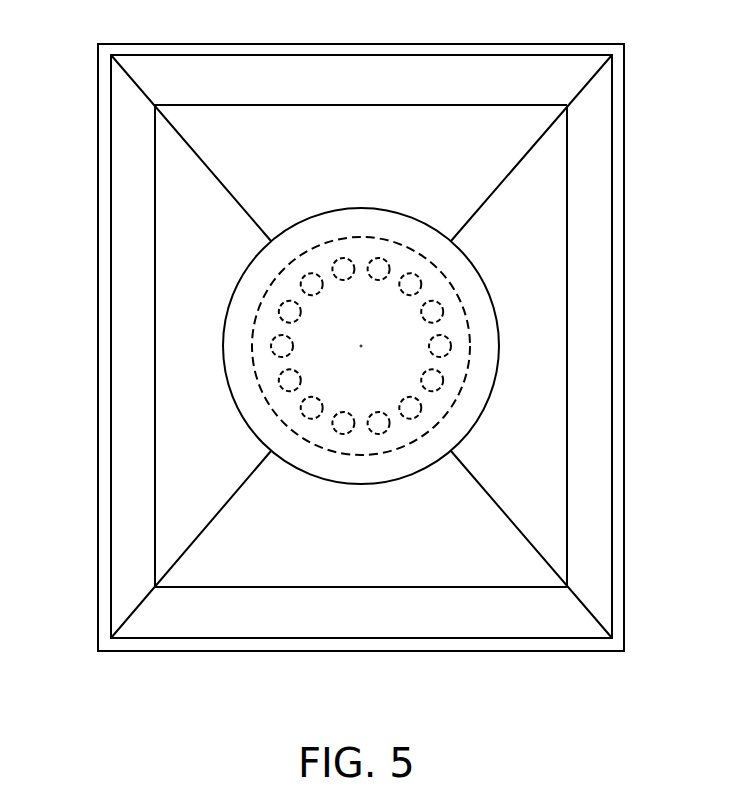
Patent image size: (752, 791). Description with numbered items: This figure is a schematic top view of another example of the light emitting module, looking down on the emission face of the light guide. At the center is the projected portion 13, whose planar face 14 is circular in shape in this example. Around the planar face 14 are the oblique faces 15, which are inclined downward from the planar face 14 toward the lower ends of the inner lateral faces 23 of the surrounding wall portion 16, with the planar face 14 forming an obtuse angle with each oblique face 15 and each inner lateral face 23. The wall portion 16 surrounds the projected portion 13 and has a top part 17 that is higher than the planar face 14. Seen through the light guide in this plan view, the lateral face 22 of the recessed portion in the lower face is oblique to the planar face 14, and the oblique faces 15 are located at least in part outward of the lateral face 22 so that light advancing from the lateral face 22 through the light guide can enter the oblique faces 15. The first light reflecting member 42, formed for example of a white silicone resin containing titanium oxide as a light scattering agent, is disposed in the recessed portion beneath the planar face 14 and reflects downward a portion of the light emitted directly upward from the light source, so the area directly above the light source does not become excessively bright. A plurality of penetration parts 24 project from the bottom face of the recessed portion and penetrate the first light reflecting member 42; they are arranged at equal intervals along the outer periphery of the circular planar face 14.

The projected portion 13 is at (344, 322).
The planar face 14 is at (355, 378).
The oblique faces 15 is at (528, 450).
The wall portion 16 is at (318, 666).
The top part 17 is at (377, 643).
The lateral face 22 is at (485, 333).
The inner lateral faces 23 is at (502, 620).
The penetration parts 24 is at (433, 311).
The first light reflecting member 42 is at (365, 298).